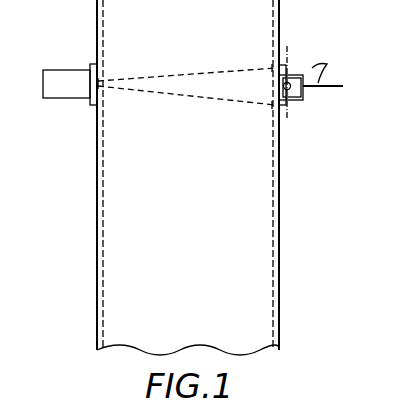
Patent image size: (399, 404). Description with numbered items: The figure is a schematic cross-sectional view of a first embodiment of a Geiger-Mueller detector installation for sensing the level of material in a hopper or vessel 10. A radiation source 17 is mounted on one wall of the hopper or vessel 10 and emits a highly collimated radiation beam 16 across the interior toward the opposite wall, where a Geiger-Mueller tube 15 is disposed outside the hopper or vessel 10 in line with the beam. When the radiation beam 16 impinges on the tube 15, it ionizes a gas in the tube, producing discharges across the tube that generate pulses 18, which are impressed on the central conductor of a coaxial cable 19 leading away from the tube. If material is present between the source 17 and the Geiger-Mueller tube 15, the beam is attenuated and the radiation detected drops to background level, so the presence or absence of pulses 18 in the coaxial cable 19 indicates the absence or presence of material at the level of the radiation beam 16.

The hopper or vessel 10 is at (284, 230).
The Geiger-Mueller tube 15 is at (293, 75).
The radiation beam 16 is at (193, 73).
The radiation source 17 is at (60, 70).
The pulses 18 is at (328, 62).
The coaxial cable 19 is at (324, 88).